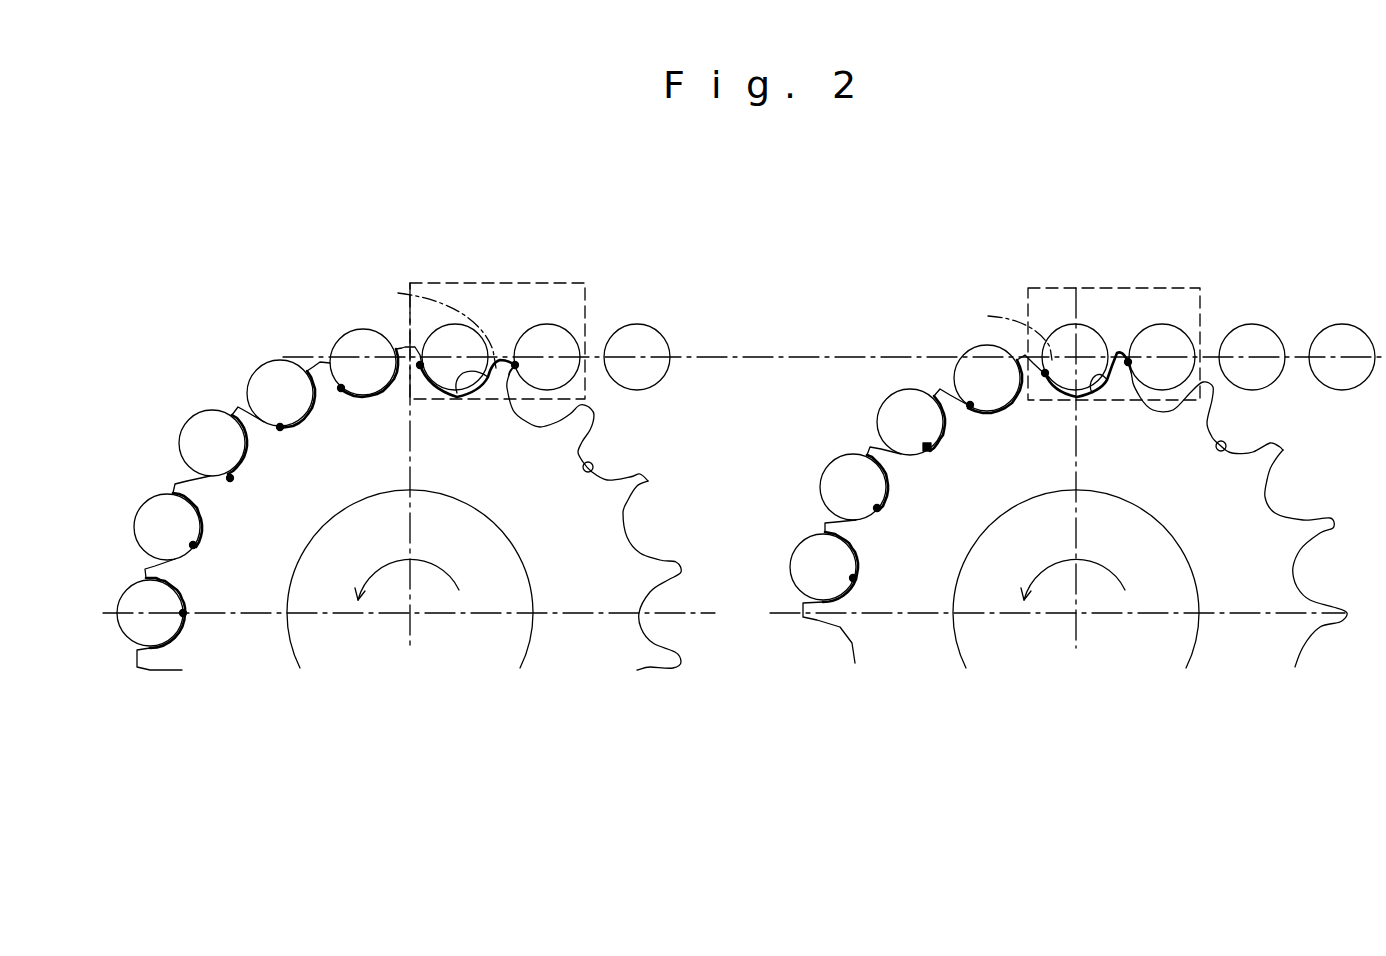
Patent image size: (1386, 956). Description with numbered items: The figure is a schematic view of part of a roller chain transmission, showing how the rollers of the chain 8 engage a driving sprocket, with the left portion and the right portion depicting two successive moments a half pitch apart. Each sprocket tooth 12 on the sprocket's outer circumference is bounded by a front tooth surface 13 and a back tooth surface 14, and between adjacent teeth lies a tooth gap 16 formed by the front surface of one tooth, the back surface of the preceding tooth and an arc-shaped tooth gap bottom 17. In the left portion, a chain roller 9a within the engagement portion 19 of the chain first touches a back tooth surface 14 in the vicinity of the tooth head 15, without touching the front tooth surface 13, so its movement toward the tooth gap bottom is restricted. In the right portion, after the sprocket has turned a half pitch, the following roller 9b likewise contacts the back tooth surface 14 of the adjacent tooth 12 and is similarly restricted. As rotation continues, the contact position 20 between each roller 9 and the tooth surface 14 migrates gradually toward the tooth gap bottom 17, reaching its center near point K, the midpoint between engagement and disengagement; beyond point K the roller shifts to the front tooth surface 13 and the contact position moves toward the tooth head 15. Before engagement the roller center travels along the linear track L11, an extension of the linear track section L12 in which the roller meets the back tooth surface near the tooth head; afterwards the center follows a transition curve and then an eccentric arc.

The chain 8 is at (683, 320).
The roller 9 is at (207, 427).
The chain roller 9a is at (555, 338).
The following roller 9b is at (645, 333).
The sprocket tooth 12 is at (643, 482).
The front tooth surface 13 is at (467, 373).
The back tooth surface 14 is at (513, 373).
The tooth head 15 is at (178, 478).
The tooth gap 16 is at (627, 442).
The tooth gap bottom 17 is at (586, 476).
The engagement portion 19 is at (572, 283).
The contact position 20 is at (190, 620).
The point K is at (197, 606).
The linear track L11 is at (772, 355).
The linear track section L12 is at (700, 322).